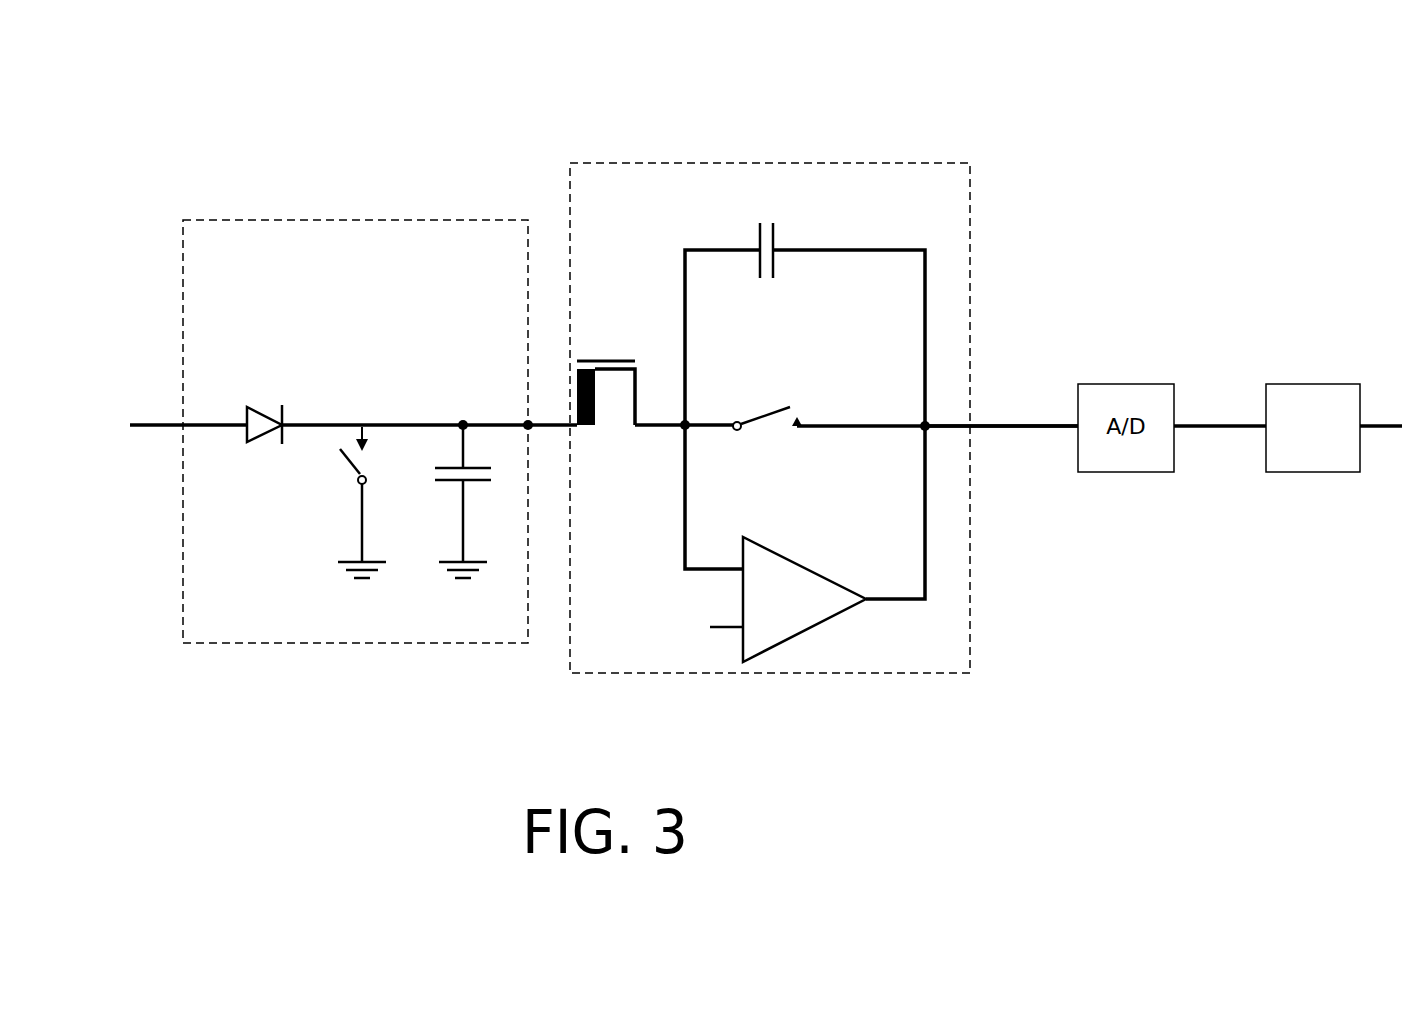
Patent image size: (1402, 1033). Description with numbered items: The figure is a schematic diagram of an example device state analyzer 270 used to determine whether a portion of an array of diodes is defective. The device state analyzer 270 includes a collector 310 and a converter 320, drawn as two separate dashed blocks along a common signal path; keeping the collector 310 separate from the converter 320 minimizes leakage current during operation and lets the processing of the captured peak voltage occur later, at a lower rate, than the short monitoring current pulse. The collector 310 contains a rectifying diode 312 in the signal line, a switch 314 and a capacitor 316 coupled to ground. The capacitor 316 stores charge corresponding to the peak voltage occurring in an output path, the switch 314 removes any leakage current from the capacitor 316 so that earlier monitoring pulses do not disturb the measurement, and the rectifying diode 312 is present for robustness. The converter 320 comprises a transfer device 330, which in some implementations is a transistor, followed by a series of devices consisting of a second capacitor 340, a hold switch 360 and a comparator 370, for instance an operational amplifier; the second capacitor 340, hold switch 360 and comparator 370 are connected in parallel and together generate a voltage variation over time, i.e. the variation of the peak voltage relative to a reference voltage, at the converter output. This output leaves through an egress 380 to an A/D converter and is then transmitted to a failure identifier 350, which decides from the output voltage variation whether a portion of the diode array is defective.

The device state analyzer 270 is at (1301, 94).
The collector 310 is at (313, 220).
The rectifying diode 312 is at (243, 418).
The switch 314 is at (338, 502).
The capacitor 316 is at (462, 535).
The converter 320 is at (820, 163).
The transfer device 330 is at (603, 361).
The second capacitor 340 is at (770, 221).
The failure identifier 350 is at (1313, 428).
The hold switch 360 is at (767, 443).
The comparator 370 is at (744, 541).
The egress 380 is at (983, 421).